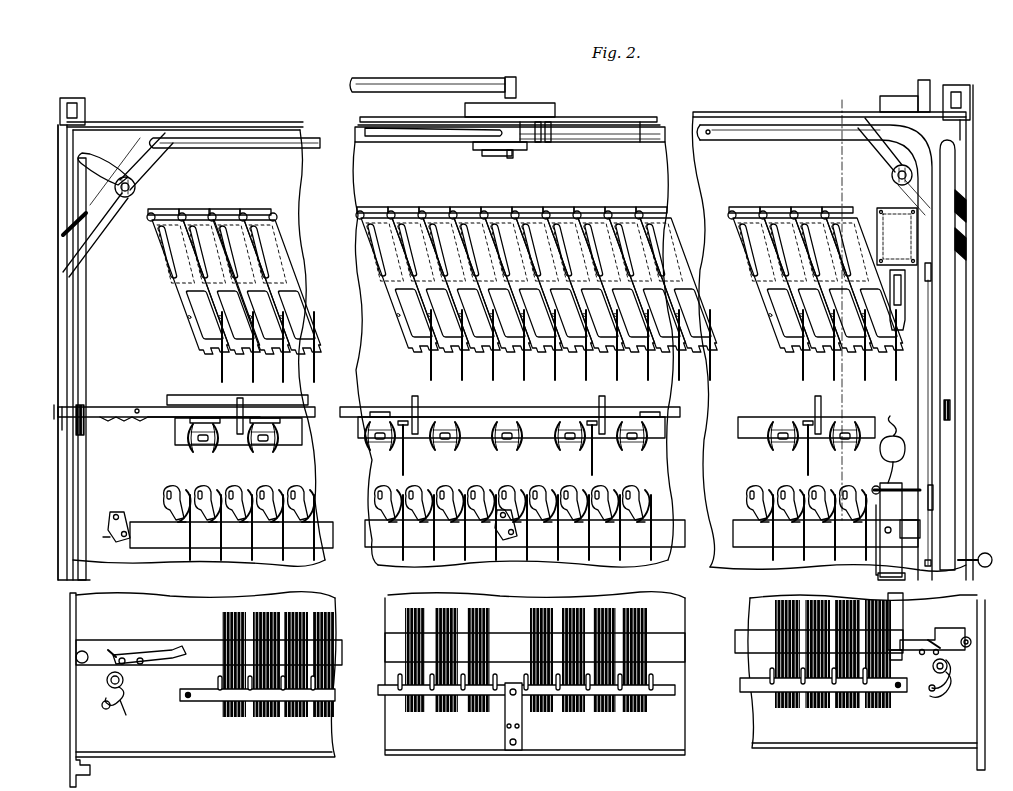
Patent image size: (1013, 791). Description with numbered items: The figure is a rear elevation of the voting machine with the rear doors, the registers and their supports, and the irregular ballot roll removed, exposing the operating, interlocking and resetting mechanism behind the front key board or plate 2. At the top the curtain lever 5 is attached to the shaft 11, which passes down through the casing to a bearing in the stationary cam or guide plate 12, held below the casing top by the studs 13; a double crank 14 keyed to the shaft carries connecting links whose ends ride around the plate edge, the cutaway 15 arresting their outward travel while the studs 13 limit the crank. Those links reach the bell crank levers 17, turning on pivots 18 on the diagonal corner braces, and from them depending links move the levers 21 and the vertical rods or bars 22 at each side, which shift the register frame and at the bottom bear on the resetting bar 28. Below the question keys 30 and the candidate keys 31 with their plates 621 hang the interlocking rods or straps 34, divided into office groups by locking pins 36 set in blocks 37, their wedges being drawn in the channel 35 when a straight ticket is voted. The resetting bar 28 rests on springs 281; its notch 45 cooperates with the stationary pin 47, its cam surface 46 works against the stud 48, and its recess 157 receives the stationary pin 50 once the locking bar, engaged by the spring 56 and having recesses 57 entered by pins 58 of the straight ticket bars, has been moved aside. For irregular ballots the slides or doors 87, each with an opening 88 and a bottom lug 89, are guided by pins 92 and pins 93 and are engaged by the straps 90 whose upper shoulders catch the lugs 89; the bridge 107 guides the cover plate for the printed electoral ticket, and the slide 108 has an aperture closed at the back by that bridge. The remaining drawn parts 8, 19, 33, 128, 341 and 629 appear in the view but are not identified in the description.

The key board or front plate 2 is at (191, 339).
The curtain lever 5 is at (430, 86).
The frame / center line 8 is at (842, 331).
The shaft 11 is at (520, 122).
The stationary cam or guide plate 12 is at (493, 157).
The studs 13 is at (550, 140).
The double crank or lever 14 is at (512, 159).
The cutaway portion 15 is at (480, 151).
The bell crank levers 17 is at (145, 170).
The pivot 18 is at (124, 197).
The rod 19 is at (185, 136).
The levers 21 is at (84, 430).
The vertically-extending rods or bars 22 is at (78, 489).
The resetting bar 28 is at (173, 668).
The question indicators or keys 30 is at (188, 445).
The candidate indicators or keys 31 is at (164, 498).
The box 33 is at (880, 237).
The interlocking rods or straps 34 is at (322, 548).
The channel 35 is at (765, 695).
The removable locking pins 36 is at (850, 700).
The blocks 37 is at (213, 703).
The notch or recess 45 is at (84, 650).
The inclined or cam surface 46 is at (950, 683).
The stationary pin or roller 47 is at (76, 661).
The stud or collar 48 is at (966, 637).
The stationary pin 50 is at (900, 628).
The spring 56 is at (878, 556).
The recesses 57 is at (888, 538).
The pins 58 is at (903, 528).
The slides or doors 87 is at (410, 292).
The opening 88 is at (396, 290).
The upturned part or lug 89 is at (590, 345).
The interlocking rods or straps 90 is at (452, 355).
The pins 92 is at (400, 330).
The pins 93 is at (645, 217).
The bridge 107 is at (878, 217).
The slide 108 is at (892, 282).
The post 128 is at (924, 80).
The recess 157 is at (921, 658).
The springs 281 is at (126, 708).
The bracket 341 is at (600, 705).
The plate 621 is at (212, 500).
The link 629 is at (192, 520).